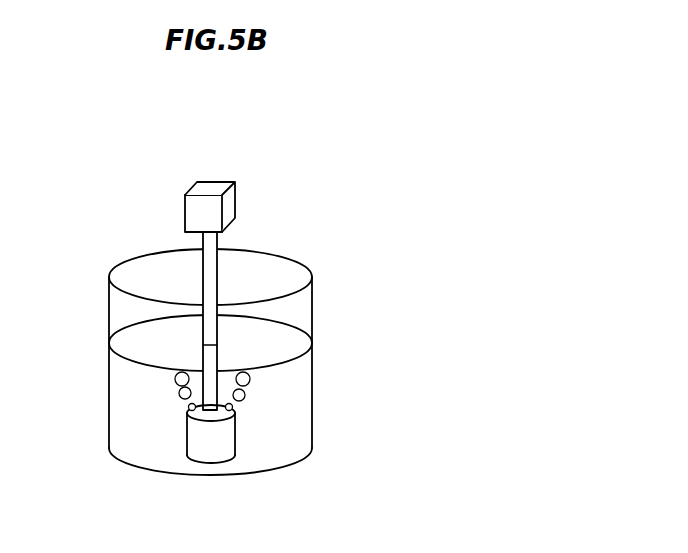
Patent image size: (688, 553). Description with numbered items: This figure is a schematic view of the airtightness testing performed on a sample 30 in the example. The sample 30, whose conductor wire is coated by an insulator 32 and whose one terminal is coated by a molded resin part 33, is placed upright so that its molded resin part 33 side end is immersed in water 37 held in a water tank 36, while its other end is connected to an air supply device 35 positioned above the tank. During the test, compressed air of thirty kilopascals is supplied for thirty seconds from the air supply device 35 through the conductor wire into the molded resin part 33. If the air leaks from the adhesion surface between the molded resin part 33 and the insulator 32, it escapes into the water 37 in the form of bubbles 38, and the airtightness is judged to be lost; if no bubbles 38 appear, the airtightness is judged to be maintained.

The sample 30 is at (226, 274).
The insulator 32 is at (208, 272).
The molded resin part 33 is at (213, 452).
The air supply device 35 is at (213, 187).
The water tank 36 is at (313, 313).
The water 37 is at (302, 393).
The bubbles 38 is at (175, 380).